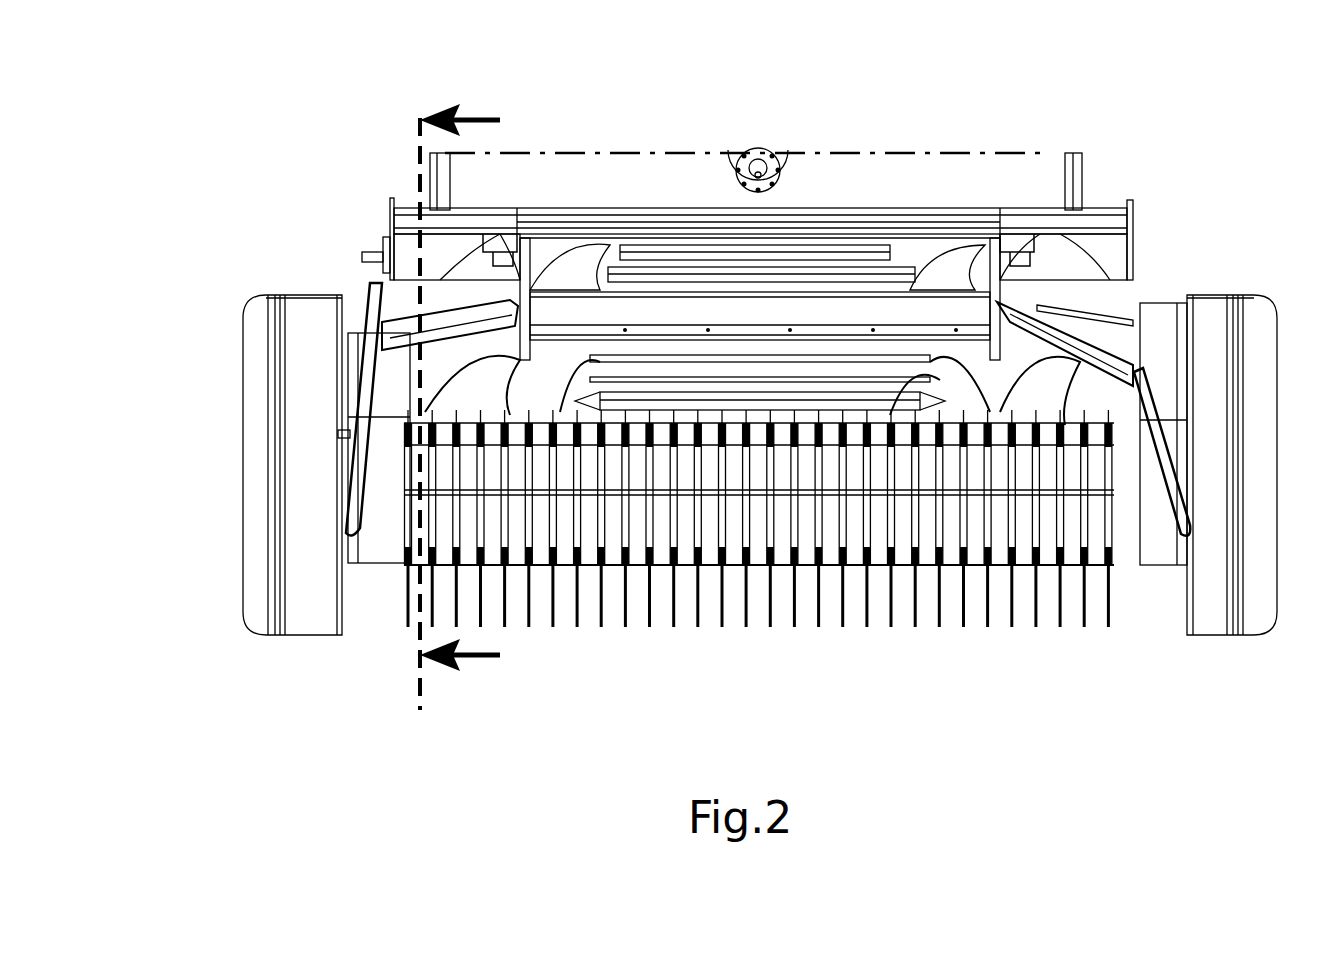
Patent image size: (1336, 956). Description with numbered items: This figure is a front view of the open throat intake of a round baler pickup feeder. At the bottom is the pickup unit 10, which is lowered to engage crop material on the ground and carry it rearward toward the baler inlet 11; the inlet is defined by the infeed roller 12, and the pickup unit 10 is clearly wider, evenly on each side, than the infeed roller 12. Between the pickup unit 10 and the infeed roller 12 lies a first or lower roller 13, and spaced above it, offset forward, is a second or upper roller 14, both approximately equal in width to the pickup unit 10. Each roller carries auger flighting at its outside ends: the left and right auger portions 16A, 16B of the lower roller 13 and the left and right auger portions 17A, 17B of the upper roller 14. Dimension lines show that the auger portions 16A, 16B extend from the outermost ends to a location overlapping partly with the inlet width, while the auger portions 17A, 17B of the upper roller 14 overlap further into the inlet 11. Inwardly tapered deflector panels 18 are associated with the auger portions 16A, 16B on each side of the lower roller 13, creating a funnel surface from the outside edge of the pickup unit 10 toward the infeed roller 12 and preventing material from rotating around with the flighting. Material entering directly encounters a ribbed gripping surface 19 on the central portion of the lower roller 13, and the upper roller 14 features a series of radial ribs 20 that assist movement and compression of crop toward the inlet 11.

The pickup unit 10 is at (1072, 543).
The baler inlet 11 is at (1005, 720).
The infeed roller 12 is at (655, 313).
The lower roller 13 is at (453, 403).
The upper roller 14 is at (412, 252).
The auger portion 16A is at (592, 780).
The auger portion 16B is at (933, 780).
The auger portion 17A is at (380, 100).
The auger portion 17B is at (898, 100).
The deflector panel 18 is at (488, 343).
The ribs 19 is at (828, 398).
The radial ribs 20 is at (802, 275).